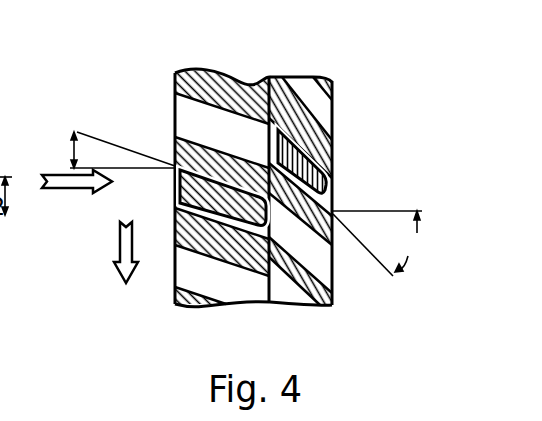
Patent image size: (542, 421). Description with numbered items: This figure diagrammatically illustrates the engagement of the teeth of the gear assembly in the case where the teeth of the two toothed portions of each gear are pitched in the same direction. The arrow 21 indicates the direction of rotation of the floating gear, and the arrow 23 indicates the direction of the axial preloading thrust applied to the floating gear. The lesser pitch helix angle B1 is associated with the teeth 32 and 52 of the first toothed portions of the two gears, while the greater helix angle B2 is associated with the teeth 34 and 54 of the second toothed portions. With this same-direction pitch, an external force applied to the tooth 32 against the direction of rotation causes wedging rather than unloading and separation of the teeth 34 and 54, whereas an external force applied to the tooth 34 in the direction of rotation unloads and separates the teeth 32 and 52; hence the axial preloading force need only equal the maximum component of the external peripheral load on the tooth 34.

The arrow indicating direction of rotation 21 is at (120, 245).
The arrow indicating axial preloading thrust 23 is at (82, 189).
The tooth of first toothed portion 32 is at (175, 144).
The tooth of second toothed portion 34 is at (333, 263).
The tooth of first toothed portion 52 is at (175, 186).
The tooth of second toothed portion 54 is at (326, 192).
The lesser pitch helix angle B1 is at (109, 150).
The greater helix angle B2 is at (380, 243).